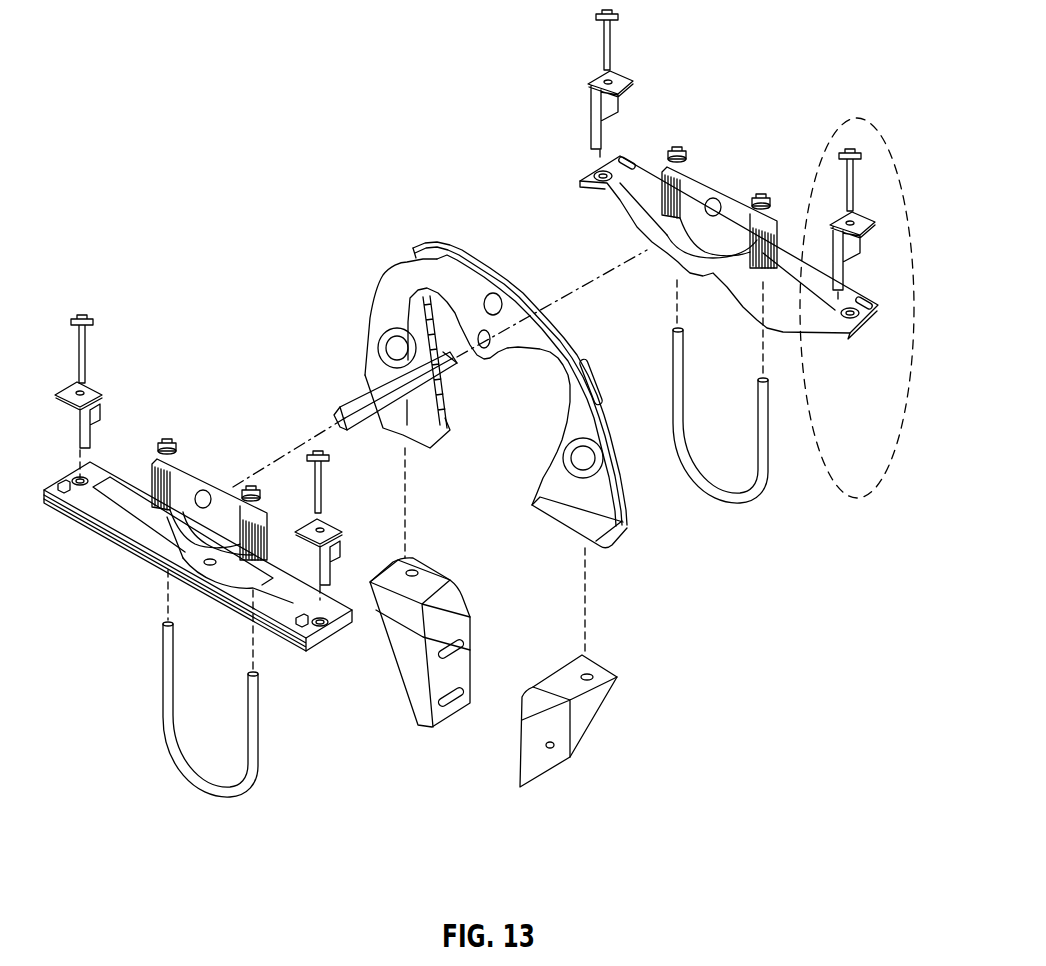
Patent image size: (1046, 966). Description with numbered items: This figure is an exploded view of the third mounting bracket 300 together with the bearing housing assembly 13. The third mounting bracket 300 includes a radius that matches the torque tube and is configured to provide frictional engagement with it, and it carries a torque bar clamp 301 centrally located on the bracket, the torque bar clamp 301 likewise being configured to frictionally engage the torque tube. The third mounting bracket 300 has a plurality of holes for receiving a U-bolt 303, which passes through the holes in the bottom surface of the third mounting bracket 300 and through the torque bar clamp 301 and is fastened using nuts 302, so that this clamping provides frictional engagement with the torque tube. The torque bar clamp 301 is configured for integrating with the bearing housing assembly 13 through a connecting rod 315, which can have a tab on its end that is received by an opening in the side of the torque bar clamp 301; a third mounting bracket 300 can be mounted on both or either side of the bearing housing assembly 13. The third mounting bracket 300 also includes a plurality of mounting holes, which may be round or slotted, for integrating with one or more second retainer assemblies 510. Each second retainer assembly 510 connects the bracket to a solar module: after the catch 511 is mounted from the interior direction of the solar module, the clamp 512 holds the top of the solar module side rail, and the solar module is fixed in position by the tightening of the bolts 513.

The bearing housing assembly 13 is at (376, 268).
The third mounting bracket 300 is at (582, 181).
The torque bar clamp 301 is at (720, 185).
The nuts 302 is at (668, 148).
The U-bolt 303 is at (740, 506).
The connecting rod 315 is at (338, 414).
The second retainer assembly 510 is at (851, 505).
The catch 511 is at (877, 316).
The clamp 512 is at (858, 230).
The bolts 513 is at (858, 178).